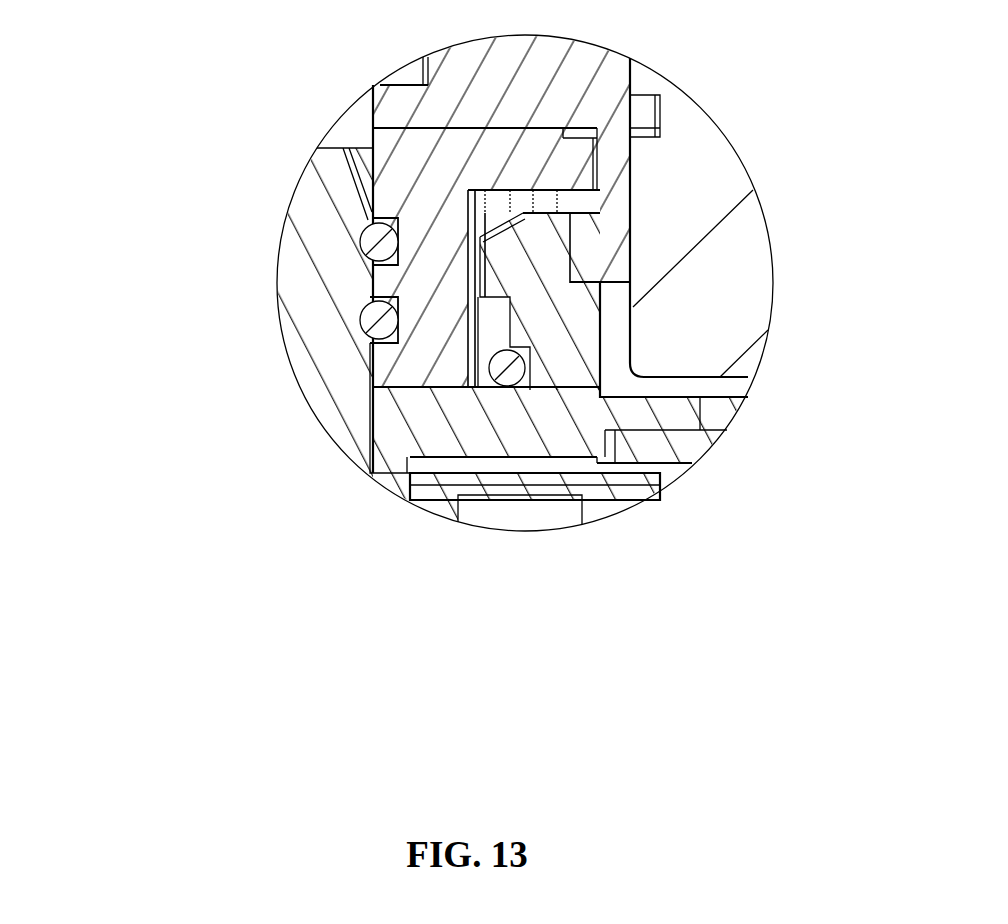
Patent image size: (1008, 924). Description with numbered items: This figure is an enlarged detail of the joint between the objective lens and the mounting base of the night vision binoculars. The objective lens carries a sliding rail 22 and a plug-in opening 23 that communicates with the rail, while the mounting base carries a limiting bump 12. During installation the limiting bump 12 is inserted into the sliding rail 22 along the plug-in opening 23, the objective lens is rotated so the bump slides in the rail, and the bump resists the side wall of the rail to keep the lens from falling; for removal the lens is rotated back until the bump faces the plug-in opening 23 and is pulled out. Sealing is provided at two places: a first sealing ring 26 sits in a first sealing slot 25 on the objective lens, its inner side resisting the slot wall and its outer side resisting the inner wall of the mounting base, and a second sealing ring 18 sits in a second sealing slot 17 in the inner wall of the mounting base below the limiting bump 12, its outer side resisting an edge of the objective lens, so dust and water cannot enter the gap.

The limiting bump 12 is at (490, 273).
The second sealing slot 17 is at (530, 350).
The second sealing ring 18 is at (528, 376).
The sliding rail 22 is at (588, 192).
The plug-in opening 23 is at (470, 245).
The first sealing slot 25 is at (371, 218).
The first sealing ring 26 is at (372, 325).